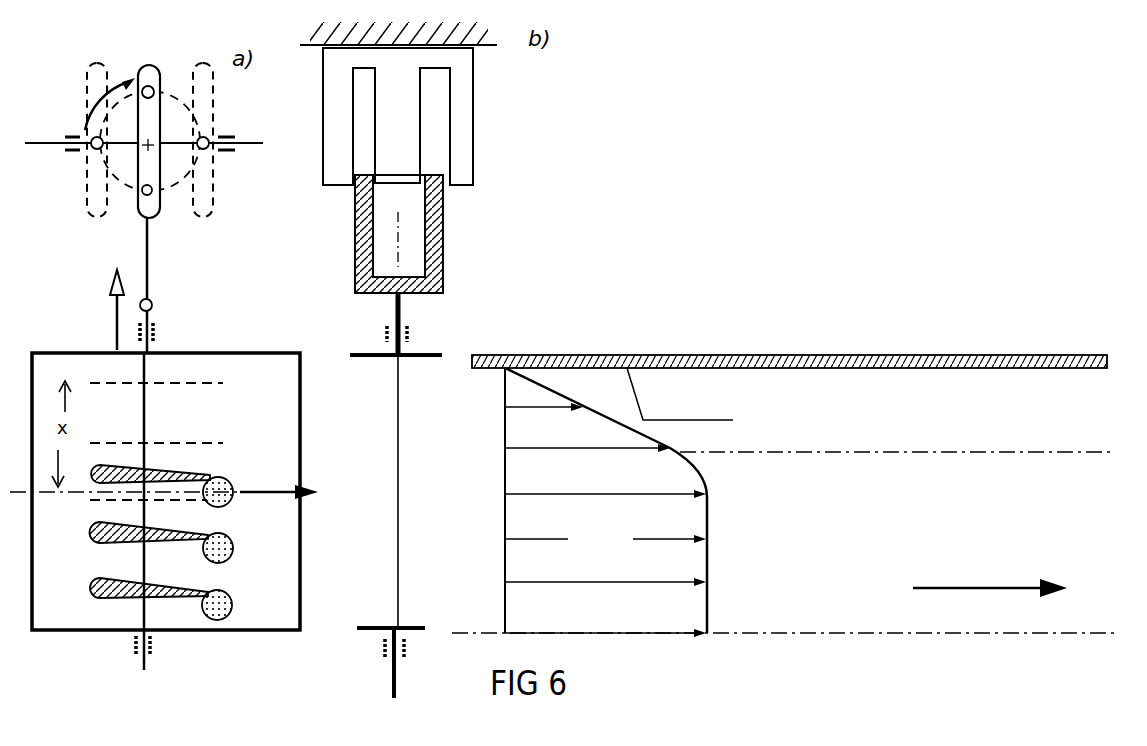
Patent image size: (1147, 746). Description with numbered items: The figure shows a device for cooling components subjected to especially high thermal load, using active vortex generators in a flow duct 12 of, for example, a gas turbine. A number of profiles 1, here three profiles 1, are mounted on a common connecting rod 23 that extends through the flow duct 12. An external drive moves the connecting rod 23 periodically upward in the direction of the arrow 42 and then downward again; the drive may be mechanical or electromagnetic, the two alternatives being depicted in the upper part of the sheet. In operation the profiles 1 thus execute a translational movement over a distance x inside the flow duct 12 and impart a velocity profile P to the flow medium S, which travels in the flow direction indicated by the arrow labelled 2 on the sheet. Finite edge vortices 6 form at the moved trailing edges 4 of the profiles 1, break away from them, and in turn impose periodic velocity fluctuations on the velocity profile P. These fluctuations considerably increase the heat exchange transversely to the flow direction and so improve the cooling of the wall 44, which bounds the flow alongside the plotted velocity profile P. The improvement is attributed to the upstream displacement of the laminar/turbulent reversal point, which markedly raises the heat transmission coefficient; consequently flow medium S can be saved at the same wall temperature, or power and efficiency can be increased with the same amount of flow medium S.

The profiles 1 is at (100, 547).
The flow direction S 2 is at (259, 487).
The trailing edges 4 is at (212, 476).
The finite edge vortices 6 is at (234, 477).
The flow duct 12 is at (237, 352).
The connecting rod 23 is at (148, 410).
The arrow 42 is at (115, 324).
The wall 44 is at (827, 370).
The velocity profile P is at (710, 495).